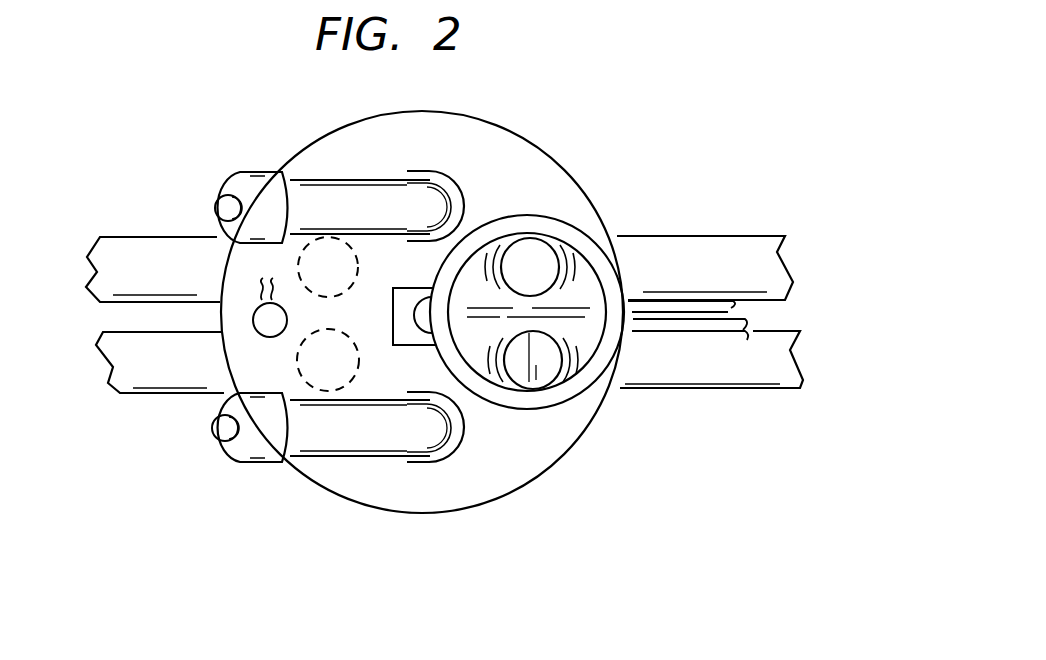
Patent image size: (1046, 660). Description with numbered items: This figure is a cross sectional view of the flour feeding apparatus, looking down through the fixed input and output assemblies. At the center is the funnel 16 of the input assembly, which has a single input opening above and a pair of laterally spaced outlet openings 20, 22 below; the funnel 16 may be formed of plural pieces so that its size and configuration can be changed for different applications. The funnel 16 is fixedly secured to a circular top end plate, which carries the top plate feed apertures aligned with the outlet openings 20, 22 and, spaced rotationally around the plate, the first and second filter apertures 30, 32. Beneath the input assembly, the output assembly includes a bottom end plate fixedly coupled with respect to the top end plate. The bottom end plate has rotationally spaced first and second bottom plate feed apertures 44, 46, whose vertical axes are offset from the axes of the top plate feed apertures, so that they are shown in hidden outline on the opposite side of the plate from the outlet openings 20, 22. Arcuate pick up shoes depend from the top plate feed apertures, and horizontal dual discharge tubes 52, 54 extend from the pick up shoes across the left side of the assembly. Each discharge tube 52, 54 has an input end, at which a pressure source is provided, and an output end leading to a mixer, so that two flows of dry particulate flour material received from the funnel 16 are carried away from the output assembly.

The funnel 16 is at (575, 232).
The first outlet opening 20 is at (540, 270).
The second outlet opening 22 is at (547, 360).
The first filter aperture 30 is at (465, 195).
The second filter aperture 32 is at (453, 450).
The first bottom plate feed aperture 44 is at (338, 262).
The second bottom plate feed aperture 46 is at (320, 378).
The first dual discharge tube 52 is at (150, 248).
The second dual discharge tube 54 is at (157, 368).